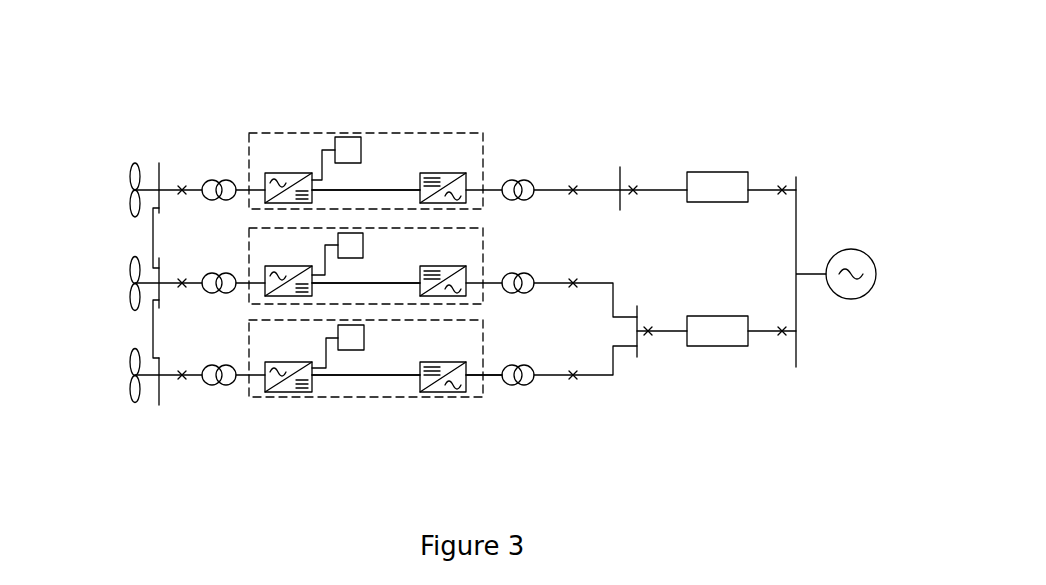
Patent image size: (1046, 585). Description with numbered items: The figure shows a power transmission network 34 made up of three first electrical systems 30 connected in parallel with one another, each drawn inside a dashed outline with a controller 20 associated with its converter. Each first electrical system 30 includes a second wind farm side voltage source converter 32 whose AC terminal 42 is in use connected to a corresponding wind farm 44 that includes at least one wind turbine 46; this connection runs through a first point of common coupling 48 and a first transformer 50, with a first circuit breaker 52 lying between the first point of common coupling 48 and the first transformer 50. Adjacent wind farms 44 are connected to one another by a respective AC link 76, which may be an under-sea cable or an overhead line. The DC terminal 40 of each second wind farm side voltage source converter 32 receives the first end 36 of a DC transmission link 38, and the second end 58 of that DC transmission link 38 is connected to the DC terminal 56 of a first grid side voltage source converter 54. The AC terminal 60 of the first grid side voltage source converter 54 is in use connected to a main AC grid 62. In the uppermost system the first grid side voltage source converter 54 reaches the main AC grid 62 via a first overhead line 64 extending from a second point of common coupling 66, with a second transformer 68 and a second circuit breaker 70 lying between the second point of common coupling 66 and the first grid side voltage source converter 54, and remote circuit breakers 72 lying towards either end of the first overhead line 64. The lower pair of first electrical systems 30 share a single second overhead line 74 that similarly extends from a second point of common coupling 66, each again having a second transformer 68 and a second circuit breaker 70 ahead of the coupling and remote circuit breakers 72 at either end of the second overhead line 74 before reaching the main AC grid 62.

The controller 20 is at (346, 137).
The first electrical system 30 is at (453, 133).
The second wind farm side voltage source converter 32 is at (256, 261).
The power transmission network 34 is at (743, 80).
The first end of DC transmission link 36 is at (320, 397).
The DC transmission link 38 is at (385, 277).
The DC terminal 40 is at (323, 383).
The AC terminal 42 is at (256, 172).
The wind farm 44 is at (108, 176).
The wind turbine 46 is at (129, 208).
The first point of common coupling 48 is at (157, 168).
The first transformer 50 is at (212, 180).
The first circuit breaker 52 is at (183, 195).
The first grid side voltage source converter 54 is at (448, 182).
The DC terminal 56 is at (418, 395).
The second end of DC transmission link 58 is at (419, 425).
The AC terminal 60 is at (477, 380).
The main AC grid 62 is at (853, 262).
The first overhead line 64 is at (713, 180).
The second point of common coupling 66 is at (621, 166).
The second transformer 68 is at (524, 196).
The second circuit breaker 70 is at (573, 185).
The remote circuit breaker 72 is at (633, 195).
The second overhead line 74 is at (712, 322).
The AC link 76 is at (152, 242).